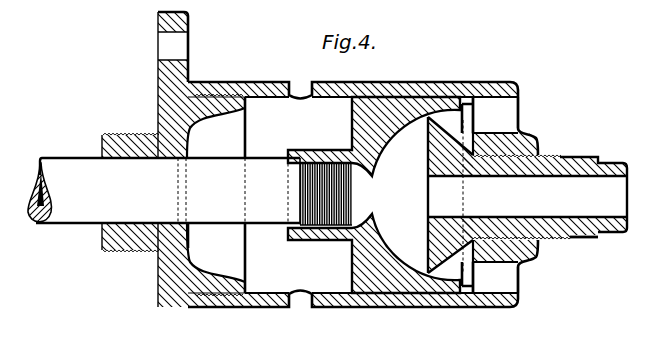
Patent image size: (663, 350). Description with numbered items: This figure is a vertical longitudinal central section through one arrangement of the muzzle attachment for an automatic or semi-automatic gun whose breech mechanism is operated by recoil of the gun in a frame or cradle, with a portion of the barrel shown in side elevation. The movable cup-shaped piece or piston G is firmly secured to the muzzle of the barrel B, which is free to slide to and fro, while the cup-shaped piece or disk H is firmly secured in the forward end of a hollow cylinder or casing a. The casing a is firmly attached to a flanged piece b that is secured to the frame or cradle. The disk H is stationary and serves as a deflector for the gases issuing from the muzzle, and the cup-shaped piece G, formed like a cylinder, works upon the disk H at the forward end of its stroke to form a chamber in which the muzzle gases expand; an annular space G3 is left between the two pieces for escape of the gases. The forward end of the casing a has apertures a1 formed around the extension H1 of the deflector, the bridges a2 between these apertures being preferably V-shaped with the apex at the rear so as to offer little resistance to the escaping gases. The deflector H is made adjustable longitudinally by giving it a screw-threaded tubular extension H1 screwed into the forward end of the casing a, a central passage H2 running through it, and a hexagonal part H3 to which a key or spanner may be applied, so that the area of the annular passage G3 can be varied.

The hollow cylinder or casing a is at (362, 196).
The flanged piece b is at (164, 159).
The apertures a1 is at (512, 107).
The bridges a2 is at (519, 278).
The muzzle or barrel B is at (190, 192).
The cup-shaped piece or piston G is at (374, 195).
The annular space G3 is at (444, 275).
The cup-shaped piece or disk H is at (450, 195).
The screw-threaded tubular extension H1 is at (553, 156).
The bore H2 is at (527, 196).
The hexagonal part H3 is at (590, 238).